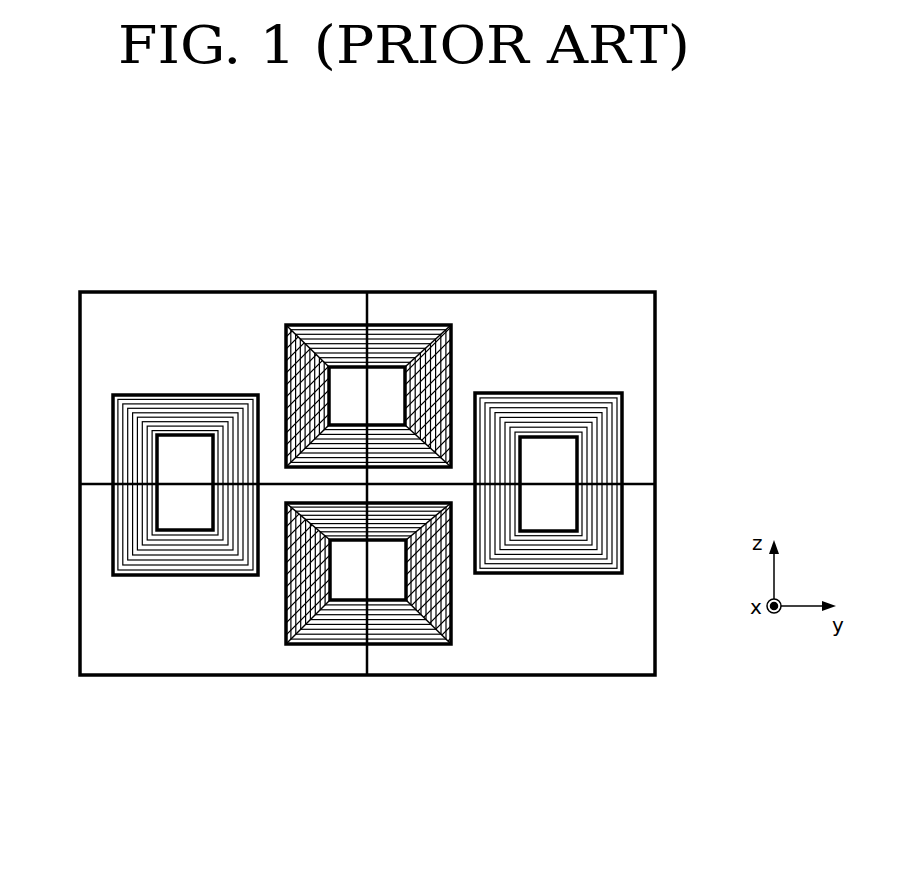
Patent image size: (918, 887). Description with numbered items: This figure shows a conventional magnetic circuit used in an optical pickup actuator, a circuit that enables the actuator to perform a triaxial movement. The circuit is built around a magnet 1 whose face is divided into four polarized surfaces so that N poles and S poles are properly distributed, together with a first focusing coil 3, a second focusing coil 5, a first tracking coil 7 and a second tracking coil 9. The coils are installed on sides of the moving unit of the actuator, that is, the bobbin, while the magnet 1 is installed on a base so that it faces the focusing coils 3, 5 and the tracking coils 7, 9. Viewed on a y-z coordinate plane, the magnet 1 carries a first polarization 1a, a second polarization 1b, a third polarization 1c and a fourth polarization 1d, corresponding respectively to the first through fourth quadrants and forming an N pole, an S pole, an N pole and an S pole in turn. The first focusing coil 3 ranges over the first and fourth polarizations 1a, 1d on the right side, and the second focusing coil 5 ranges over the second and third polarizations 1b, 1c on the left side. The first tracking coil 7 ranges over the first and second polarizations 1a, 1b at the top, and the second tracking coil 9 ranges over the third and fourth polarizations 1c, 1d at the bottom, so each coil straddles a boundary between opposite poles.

The magnet 1 is at (98, 225).
The first polarization 1a is at (541, 312).
The second polarization 1b is at (173, 312).
The third polarization 1c is at (175, 660).
The fourth polarization 1d is at (544, 660).
The first focusing coil 3 is at (605, 458).
The second focusing coil 5 is at (130, 462).
The first tracking coil 7 is at (392, 340).
The second tracking coil 9 is at (392, 643).